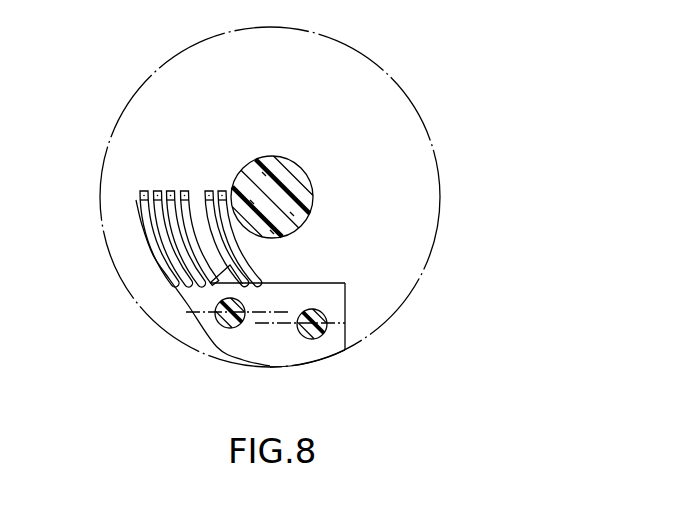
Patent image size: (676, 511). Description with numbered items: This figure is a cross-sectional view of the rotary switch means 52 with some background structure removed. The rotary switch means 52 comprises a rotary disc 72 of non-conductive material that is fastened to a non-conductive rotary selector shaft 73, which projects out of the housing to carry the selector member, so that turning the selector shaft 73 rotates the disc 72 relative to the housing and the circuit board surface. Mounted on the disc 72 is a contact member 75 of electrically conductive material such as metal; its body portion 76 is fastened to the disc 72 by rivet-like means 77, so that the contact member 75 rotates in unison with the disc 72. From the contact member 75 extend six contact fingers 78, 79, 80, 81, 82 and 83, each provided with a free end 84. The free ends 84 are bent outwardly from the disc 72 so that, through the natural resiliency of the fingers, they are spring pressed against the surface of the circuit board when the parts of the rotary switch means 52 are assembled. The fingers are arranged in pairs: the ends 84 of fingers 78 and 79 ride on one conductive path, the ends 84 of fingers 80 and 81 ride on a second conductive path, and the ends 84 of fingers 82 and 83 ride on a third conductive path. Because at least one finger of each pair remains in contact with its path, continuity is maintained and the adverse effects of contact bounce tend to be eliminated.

The rotary switch means 52 is at (462, 87).
The rotary disc 72 is at (427, 181).
The rotary selector shaft 73 is at (300, 163).
The contact member 75 is at (302, 292).
The body portion 76 is at (332, 299).
The rivet-like means 77 is at (221, 322).
The contact finger 78 is at (200, 232).
The contact finger 79 is at (230, 265).
The contact finger 80 is at (208, 190).
The contact finger 81 is at (176, 256).
The contact finger 82 is at (158, 242).
The contact finger 83 is at (140, 213).
The free ends 84 is at (172, 190).